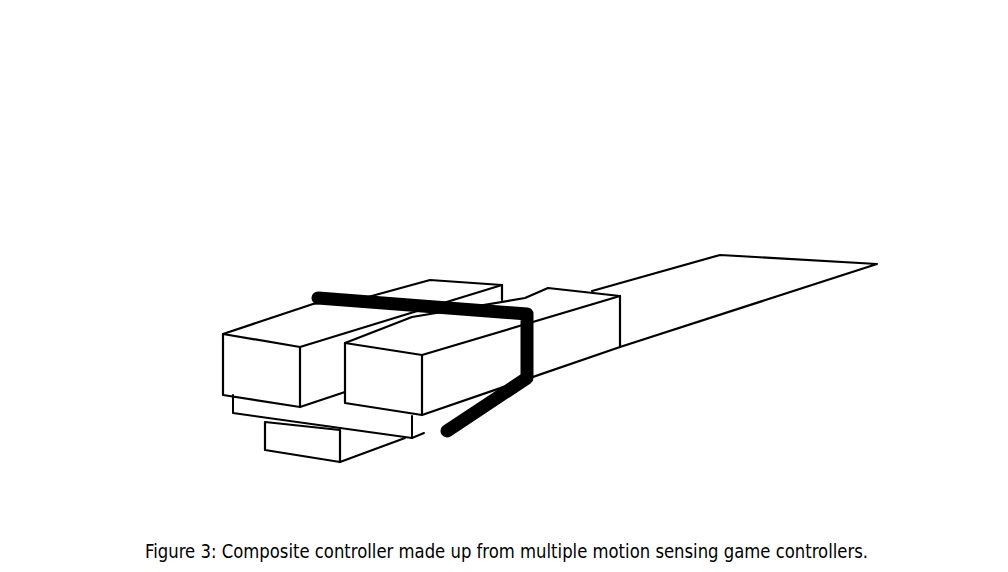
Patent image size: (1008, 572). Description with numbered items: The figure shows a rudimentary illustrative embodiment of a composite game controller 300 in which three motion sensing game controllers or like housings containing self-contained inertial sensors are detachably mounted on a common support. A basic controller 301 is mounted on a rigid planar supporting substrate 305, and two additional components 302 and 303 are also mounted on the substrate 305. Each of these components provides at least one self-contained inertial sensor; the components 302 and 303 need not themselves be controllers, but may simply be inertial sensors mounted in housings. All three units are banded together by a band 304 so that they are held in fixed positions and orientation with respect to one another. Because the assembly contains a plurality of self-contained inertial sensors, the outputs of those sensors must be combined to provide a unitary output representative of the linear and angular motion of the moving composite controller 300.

The composite controller 300 is at (268, 106).
The basic controller 301 is at (222, 357).
The component 302 is at (303, 456).
The component 303 is at (567, 347).
The band 304 is at (315, 292).
The substrate 305 is at (695, 262).